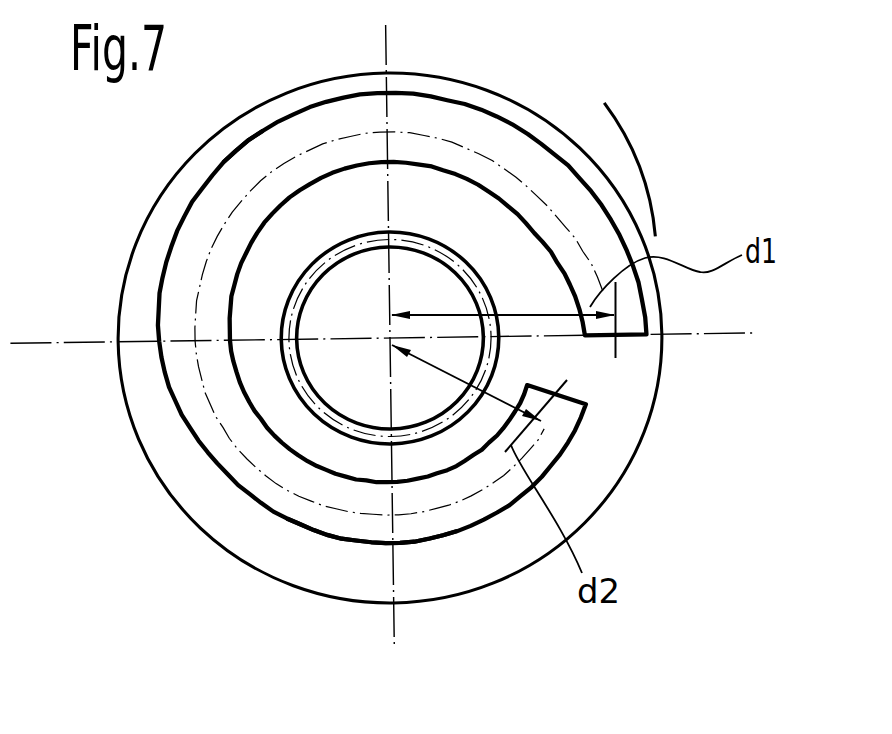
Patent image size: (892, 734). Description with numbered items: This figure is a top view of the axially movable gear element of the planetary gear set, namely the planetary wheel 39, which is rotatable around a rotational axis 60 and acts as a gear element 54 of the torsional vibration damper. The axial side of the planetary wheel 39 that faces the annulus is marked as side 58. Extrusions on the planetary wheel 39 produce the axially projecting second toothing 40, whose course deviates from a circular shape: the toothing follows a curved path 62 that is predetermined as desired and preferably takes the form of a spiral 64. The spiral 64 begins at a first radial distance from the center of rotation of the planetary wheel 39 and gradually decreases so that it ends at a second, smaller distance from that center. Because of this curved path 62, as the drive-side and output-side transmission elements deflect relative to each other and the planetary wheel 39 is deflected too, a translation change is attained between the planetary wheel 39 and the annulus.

The planetary wheel 39 is at (465, 95).
The second toothing 40 is at (552, 177).
The gear element 54 is at (631, 201).
The axial side of the planetary wheel 58 is at (342, 586).
The rotational axis 60 is at (390, 338).
The curved path 62 is at (257, 207).
The spiral 64 is at (193, 322).